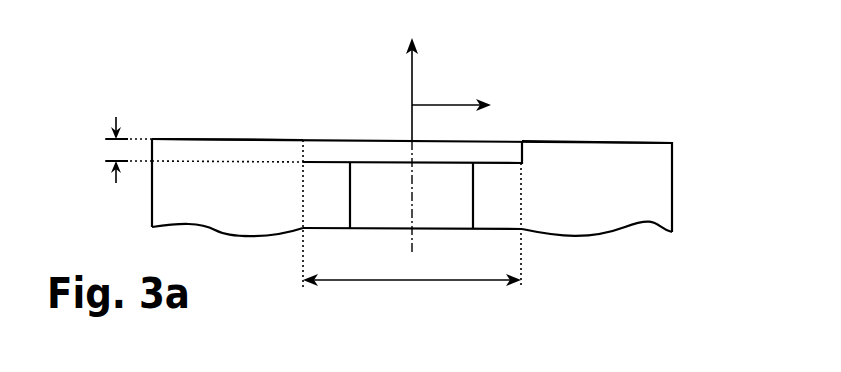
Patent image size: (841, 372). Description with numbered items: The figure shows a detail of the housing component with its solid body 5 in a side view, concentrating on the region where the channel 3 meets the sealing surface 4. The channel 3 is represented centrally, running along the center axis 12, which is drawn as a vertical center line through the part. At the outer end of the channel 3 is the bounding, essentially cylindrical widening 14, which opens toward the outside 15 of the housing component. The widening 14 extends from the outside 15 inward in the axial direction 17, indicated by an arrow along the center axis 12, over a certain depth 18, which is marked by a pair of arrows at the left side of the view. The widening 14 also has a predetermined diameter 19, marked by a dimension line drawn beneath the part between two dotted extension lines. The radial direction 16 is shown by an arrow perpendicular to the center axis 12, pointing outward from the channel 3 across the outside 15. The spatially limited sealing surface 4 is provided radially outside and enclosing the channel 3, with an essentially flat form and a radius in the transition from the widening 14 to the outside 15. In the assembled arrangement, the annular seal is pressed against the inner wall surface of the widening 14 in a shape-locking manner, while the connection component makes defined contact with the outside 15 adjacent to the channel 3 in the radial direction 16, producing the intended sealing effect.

The channel 3 is at (410, 224).
The sealing surface 4 is at (500, 156).
The solid body 5 is at (660, 185).
The center axis 12 is at (410, 129).
The widening 14 is at (357, 148).
The outside 15 is at (605, 141).
The radial direction 16 is at (455, 104).
The axial direction 17 is at (420, 50).
The depth 18 is at (102, 150).
The diameter 19 is at (418, 282).